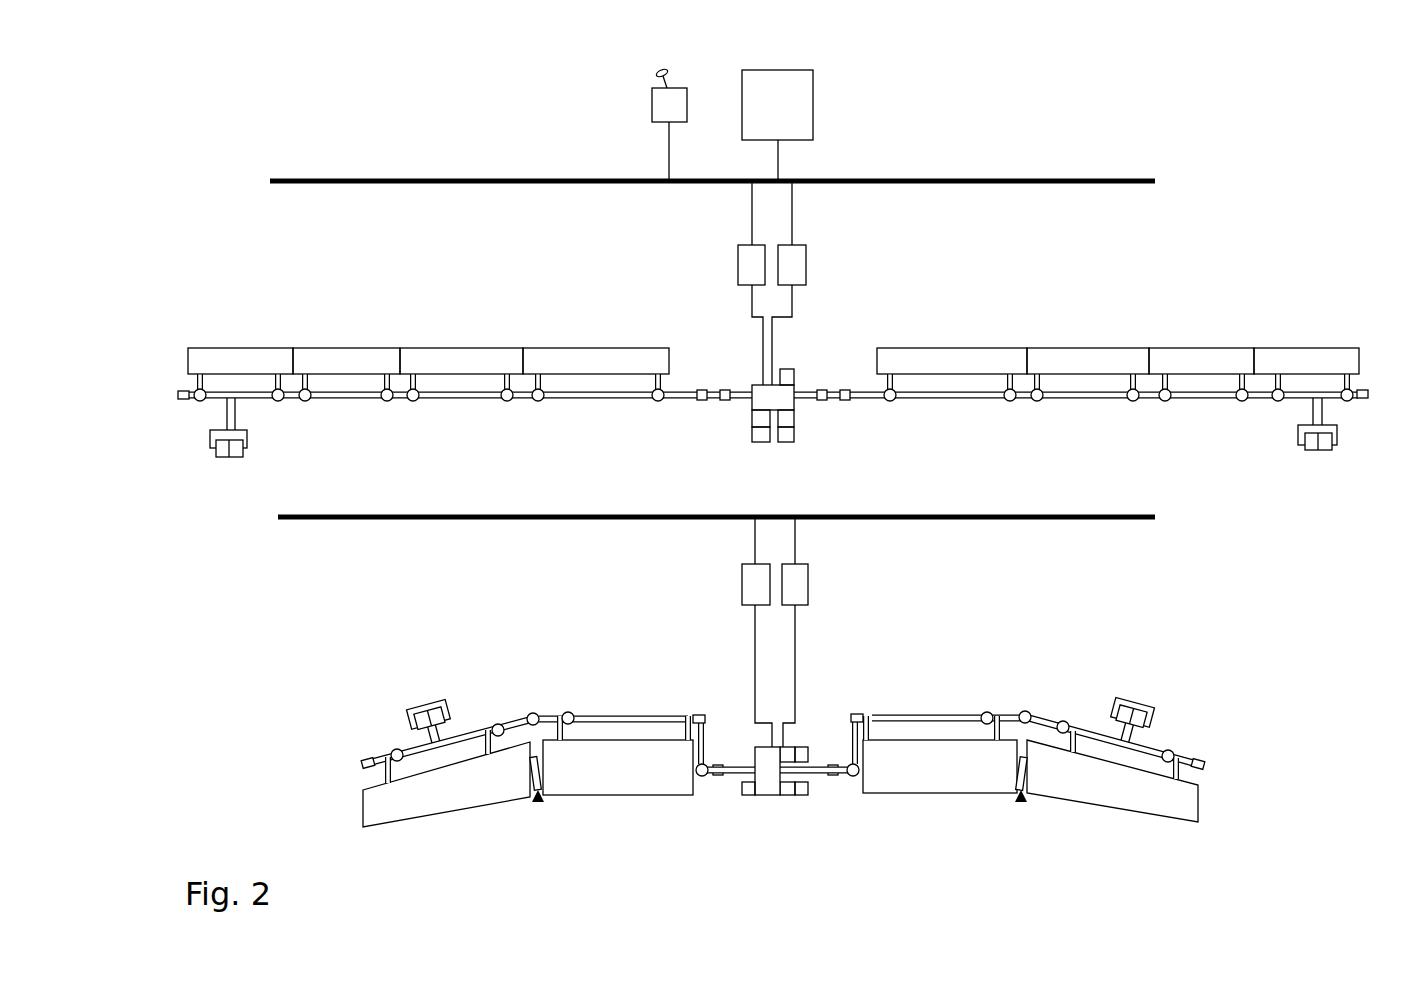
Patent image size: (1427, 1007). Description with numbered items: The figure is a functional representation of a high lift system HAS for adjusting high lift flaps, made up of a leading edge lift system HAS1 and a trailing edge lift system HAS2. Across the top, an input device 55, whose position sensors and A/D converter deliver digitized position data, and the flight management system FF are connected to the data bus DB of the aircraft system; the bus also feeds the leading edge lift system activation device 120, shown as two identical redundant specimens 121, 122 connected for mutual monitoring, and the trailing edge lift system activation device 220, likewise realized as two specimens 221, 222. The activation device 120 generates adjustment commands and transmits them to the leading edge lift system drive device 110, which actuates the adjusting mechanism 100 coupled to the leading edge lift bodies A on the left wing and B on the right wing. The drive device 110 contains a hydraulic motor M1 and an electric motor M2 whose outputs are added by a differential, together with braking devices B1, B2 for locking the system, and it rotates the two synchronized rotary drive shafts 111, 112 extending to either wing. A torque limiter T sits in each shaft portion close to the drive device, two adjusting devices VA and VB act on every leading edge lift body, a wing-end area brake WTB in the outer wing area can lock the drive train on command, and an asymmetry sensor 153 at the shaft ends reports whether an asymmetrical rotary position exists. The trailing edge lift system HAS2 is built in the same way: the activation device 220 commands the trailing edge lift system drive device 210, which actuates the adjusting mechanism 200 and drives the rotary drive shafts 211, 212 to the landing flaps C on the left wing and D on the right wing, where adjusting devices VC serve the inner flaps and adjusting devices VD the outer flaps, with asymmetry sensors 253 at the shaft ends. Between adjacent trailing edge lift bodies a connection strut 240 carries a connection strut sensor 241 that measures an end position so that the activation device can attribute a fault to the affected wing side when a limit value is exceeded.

The input device 55 is at (655, 104).
The flight management system FF is at (833, 89).
The data bus DB is at (1033, 180).
The high lift system HAS is at (1202, 150).
The leading edge lift system HAS1 is at (395, 296).
The trailing edge lift system HAS2 is at (241, 688).
The leading edge lift system activation device 120 is at (678, 257).
The first specimen of the activation device 121 is at (750, 275).
The second specimen of the activation device 122 is at (800, 269).
The leading edge lift system drive device 110 is at (804, 380).
The adjusting mechanism 100 is at (1099, 457).
The leading edge lift bodies of the left wing A is at (216, 334).
The leading edge lift bodies of the right wing B is at (944, 334).
The asymmetry sensor 153 is at (183, 391).
The torque limiter T is at (702, 389).
The adjusting device VA is at (278, 402).
The adjusting device VB is at (200, 402).
The wing-end area brake WTB is at (236, 456).
The rotary drive shaft 211 is at (452, 400).
The rotary drive shaft 212 is at (950, 400).
The braking device B1 is at (758, 420).
The hydraulic motor M1 is at (758, 440).
The braking device B2 is at (790, 420).
The electric motor M2 is at (790, 440).
The trailing edge lift system activation device 220 is at (712, 578).
The first specimen of the activation device 221 is at (745, 597).
The second specimen of the activation device 222 is at (802, 597).
The trailing edge lift system drive device 210 is at (759, 812).
The adjusting mechanism 200 is at (337, 762).
The rotary drive shaft 111 is at (618, 714).
The rotary drive shaft 112 is at (915, 713).
The asymmetry sensor 253 is at (365, 770).
The adjusting device VC is at (491, 720).
The adjusting device VD is at (383, 740).
The trailing edge lift bodies of the left wing C is at (421, 835).
The trailing edge lift bodies of the right wing D is at (925, 815).
The connection strut 240 is at (530, 768).
The connection strut sensor 241 is at (537, 803).